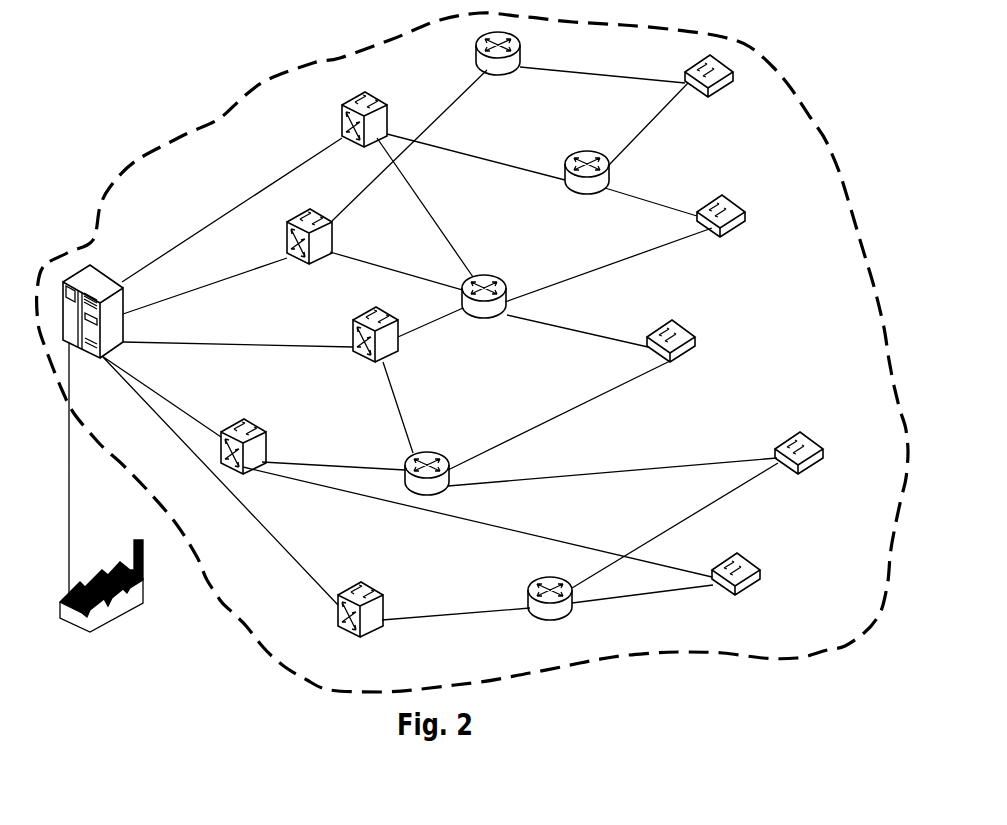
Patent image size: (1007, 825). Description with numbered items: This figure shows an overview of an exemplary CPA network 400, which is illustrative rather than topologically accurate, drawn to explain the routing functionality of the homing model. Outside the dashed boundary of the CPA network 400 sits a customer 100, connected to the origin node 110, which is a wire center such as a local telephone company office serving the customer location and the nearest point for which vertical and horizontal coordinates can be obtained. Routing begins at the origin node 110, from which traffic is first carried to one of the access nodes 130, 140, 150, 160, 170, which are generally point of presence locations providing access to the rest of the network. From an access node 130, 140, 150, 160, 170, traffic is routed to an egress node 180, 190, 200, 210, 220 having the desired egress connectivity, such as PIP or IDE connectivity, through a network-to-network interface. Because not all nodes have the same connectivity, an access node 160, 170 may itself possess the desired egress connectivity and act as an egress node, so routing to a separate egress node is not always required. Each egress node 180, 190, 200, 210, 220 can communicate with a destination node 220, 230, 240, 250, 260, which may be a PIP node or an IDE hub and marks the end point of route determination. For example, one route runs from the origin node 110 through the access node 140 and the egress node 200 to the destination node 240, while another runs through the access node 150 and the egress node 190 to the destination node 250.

The customer 100 is at (102, 596).
The origin node 110 is at (104, 323).
The access node 130 is at (364, 131).
The access node 140 is at (312, 247).
The access node 150 is at (366, 347).
The access node 160 is at (245, 455).
The access node 170 is at (373, 615).
The egress node 180 is at (567, 610).
The egress node 190 is at (425, 488).
The egress node 200 is at (483, 310).
The egress node 210 is at (587, 186).
The egress node / destination node 220 is at (612, 78).
The destination node 230 is at (722, 228).
The destination node 240 is at (674, 354).
The destination node 250 is at (800, 466).
The destination node 260 is at (737, 587).
The CPA network 400 is at (484, 352).